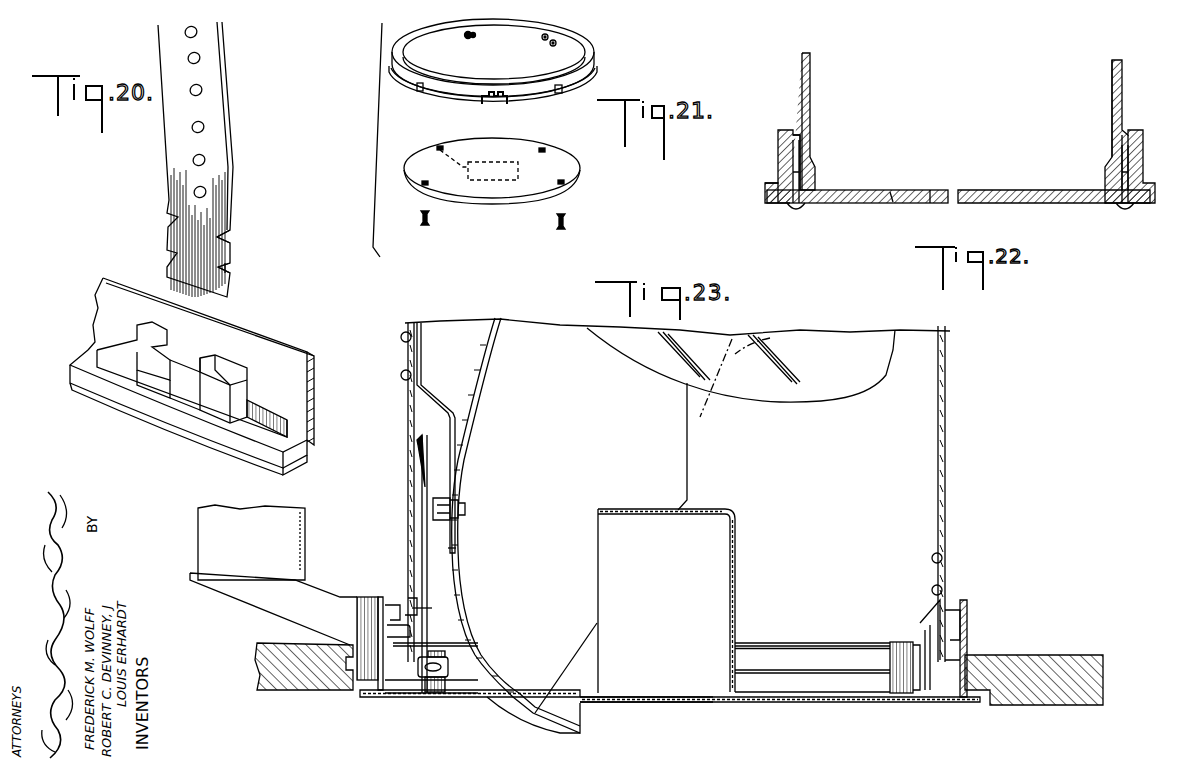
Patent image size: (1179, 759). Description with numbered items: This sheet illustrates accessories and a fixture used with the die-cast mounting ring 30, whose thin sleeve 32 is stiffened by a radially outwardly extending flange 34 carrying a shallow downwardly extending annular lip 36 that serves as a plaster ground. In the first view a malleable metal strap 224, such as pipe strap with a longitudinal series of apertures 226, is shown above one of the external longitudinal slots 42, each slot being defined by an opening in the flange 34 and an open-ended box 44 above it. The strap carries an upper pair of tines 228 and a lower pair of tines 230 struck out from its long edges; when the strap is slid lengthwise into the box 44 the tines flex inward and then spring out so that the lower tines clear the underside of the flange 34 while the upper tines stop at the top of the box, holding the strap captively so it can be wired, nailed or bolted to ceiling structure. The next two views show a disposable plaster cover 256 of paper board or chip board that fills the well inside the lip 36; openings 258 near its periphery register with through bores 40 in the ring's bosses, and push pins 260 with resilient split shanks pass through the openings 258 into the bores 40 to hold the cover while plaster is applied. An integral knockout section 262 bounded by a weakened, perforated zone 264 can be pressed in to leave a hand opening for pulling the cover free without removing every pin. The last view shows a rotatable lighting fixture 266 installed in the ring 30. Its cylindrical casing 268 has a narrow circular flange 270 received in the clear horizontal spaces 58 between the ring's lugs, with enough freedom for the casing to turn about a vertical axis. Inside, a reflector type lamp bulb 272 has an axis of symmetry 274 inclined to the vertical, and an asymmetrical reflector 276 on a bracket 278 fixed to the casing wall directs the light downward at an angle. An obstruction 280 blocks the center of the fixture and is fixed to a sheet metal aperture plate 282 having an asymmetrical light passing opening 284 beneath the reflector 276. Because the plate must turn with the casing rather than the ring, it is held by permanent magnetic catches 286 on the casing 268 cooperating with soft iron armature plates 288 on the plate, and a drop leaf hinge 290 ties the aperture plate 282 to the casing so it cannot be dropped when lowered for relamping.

In FIG. 20, the metal strap 224 is at (168, 166).
In FIG. 20, the apertures 226 is at (200, 62).
In FIG. 20, the upper pair of tines 228 is at (222, 238).
In FIG. 20, the lower pair of tines 230 is at (226, 275).
In FIG. 20, the mounting ring 30 is at (210, 382).
In FIG. 20, the sleeve 32 is at (317, 412).
In FIG. 20, the flange 34 is at (305, 452).
In FIG. 20, the annular lip 36 is at (290, 472).
In FIG. 22, the annular lip 36 is at (765, 201).
In FIG. 20, the external longitudinal slots 42 is at (225, 362).
In FIG. 20, the open-ended box 44 is at (243, 384).
In FIG. 21, the disposable plaster cover 256 is at (492, 200).
In FIG. 22, the disposable plaster cover 256 is at (855, 205).
In FIG. 21, the openings 258 is at (542, 150).
In FIG. 21, the push pins 260 is at (566, 220).
In FIG. 22, the push pins 260 is at (798, 212).
In FIG. 21, the knockout section 262 is at (505, 170).
In FIG. 22, the knockout section 262 is at (931, 190).
In FIG. 21, the weakened zone 264 is at (434, 148).
In FIG. 22, the weakened zone 264 is at (895, 191).
In FIG. 22, the bores 40 is at (790, 131).
In FIG. 23, the lighting fixture 266 is at (983, 417).
In FIG. 23, the cylindrical casing 268 is at (946, 470).
In FIG. 23, the circular flange 270 is at (440, 650).
In FIG. 23, the reflector type lamp bulb 272 is at (830, 400).
In FIG. 23, the axis of symmetry 274 is at (760, 338).
In FIG. 23, the asymmetrical reflector 276 is at (483, 353).
In FIG. 23, the bracket 278 is at (441, 410).
In FIG. 23, the obstruction 280 is at (738, 550).
In FIG. 23, the aperture plate 282 is at (805, 703).
In FIG. 23, the asymmetrical light passing opening 284 is at (705, 704).
In FIG. 23, the permanent magnetic catches 286 is at (893, 645).
In FIG. 23, the ferromagnetic armature plates 288 is at (915, 719).
In FIG. 23, the drop leaf hinge 290 is at (428, 578).
In FIG. 23, the clear horizontal space 58 is at (948, 694).